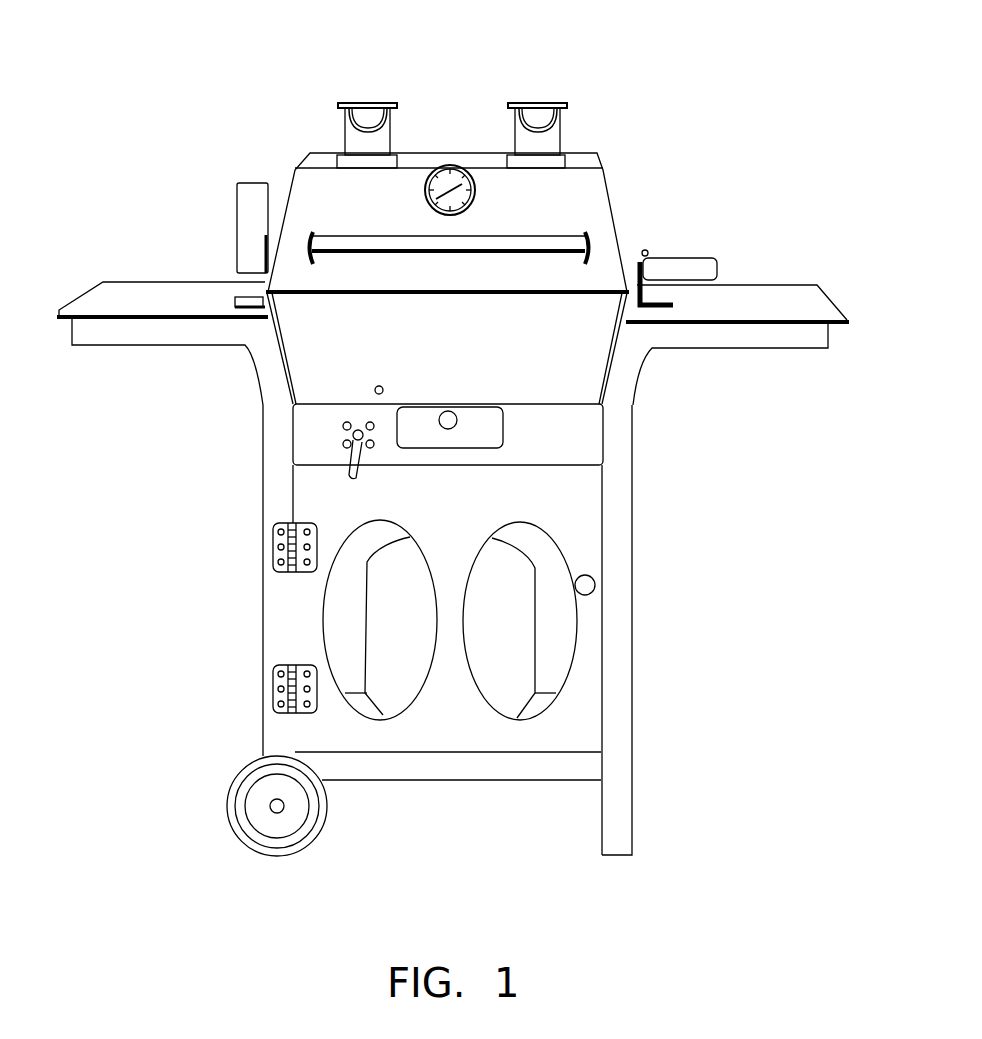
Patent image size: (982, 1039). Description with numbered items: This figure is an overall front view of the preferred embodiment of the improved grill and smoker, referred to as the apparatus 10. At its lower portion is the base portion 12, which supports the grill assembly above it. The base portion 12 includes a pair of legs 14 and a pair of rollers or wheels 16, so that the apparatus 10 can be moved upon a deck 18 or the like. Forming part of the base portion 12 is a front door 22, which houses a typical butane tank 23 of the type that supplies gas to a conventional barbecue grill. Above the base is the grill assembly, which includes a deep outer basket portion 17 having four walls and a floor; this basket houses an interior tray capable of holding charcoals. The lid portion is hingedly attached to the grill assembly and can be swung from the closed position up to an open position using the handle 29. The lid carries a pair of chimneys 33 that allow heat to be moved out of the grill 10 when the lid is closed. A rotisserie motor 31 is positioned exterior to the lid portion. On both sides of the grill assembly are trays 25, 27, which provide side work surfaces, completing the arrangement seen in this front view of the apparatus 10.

The apparatus 10 is at (623, 115).
The base portion 12 is at (460, 521).
The legs 14 is at (607, 795).
The wheels 16 is at (315, 815).
The outer basket portion 17 is at (458, 347).
The deck 18 is at (686, 836).
The front door 22 is at (328, 495).
The butane tank 23 is at (393, 643).
The tray 25 is at (740, 303).
The tray 27 is at (205, 299).
The handle 29 is at (558, 240).
The rotisserie motor 31 is at (250, 210).
The chimneys 33 is at (356, 142).